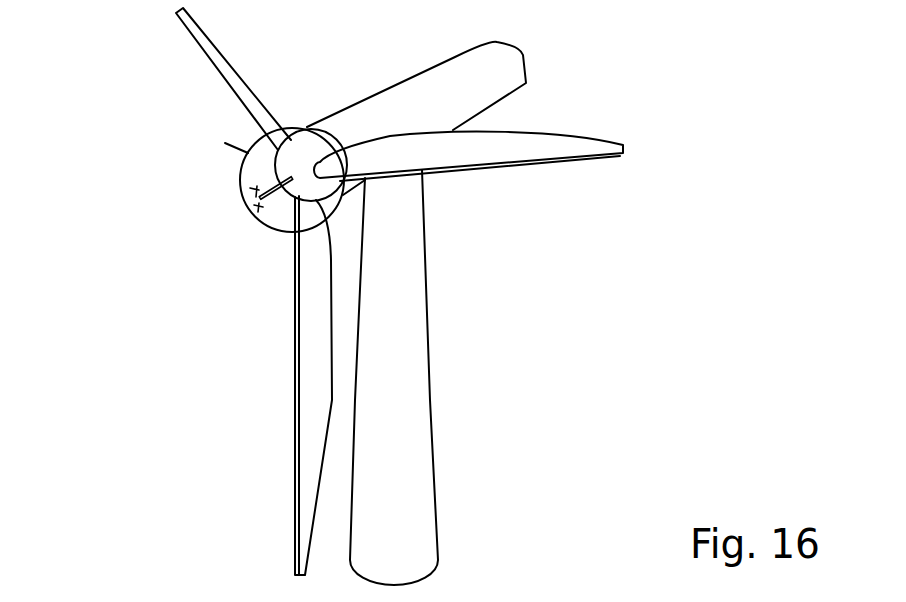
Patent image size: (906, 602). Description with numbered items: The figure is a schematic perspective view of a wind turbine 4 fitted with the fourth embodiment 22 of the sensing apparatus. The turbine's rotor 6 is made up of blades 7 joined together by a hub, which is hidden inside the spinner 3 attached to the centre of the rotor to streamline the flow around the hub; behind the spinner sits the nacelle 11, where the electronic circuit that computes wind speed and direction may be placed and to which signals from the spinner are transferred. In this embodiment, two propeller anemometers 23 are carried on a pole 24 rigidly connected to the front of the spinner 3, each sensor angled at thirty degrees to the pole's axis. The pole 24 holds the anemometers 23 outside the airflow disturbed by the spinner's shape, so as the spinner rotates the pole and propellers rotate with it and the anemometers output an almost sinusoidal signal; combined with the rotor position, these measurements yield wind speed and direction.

The fourth embodiment 22 is at (100, 124).
The spinner 3 is at (302, 143).
The rotor 6 is at (333, 206).
The nacelle 11 is at (515, 61).
The blades 7 is at (200, 32).
The wind turbine 4 is at (498, 224).
The propeller anemometers 23 is at (244, 189).
The pole 24 is at (279, 197).